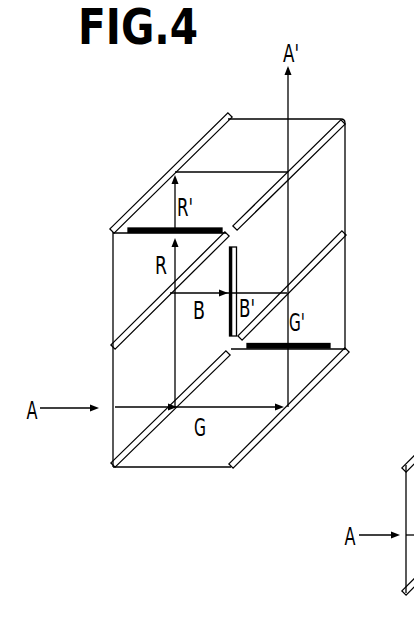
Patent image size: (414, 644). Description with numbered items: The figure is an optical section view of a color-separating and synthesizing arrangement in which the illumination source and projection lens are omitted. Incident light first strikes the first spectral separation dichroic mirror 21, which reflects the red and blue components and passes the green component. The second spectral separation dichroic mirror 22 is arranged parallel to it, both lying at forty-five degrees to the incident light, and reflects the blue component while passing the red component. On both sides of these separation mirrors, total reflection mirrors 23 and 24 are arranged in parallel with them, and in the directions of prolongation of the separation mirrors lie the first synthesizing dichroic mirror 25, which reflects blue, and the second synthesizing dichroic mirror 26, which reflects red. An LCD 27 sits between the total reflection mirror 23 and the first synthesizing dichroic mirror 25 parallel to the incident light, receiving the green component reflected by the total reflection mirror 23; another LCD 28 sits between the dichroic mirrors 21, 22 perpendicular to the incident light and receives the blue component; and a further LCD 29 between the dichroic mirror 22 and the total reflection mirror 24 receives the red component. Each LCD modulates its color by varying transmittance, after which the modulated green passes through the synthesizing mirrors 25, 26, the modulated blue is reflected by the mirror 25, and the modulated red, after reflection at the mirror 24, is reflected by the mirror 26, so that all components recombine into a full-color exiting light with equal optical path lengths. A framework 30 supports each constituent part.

The first dichroic mirror for spectral light separation 21 is at (117, 456).
The second dichroic mirror for spectral light separation 22 is at (128, 329).
The total reflection mirror 23 is at (271, 436).
The total reflection mirror 24 is at (162, 178).
The first dichroic mirror for synthesis 25 is at (320, 252).
The second dichroic mirror for synthesis 26 is at (326, 134).
The LCD 27 is at (326, 345).
The LCD 28 is at (238, 263).
The LCD 29 is at (146, 230).
The framework 30 is at (172, 468).